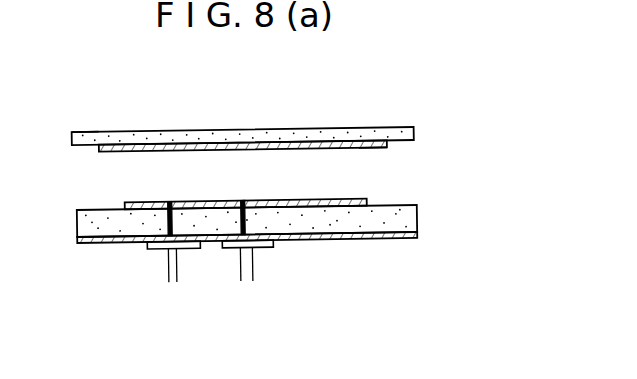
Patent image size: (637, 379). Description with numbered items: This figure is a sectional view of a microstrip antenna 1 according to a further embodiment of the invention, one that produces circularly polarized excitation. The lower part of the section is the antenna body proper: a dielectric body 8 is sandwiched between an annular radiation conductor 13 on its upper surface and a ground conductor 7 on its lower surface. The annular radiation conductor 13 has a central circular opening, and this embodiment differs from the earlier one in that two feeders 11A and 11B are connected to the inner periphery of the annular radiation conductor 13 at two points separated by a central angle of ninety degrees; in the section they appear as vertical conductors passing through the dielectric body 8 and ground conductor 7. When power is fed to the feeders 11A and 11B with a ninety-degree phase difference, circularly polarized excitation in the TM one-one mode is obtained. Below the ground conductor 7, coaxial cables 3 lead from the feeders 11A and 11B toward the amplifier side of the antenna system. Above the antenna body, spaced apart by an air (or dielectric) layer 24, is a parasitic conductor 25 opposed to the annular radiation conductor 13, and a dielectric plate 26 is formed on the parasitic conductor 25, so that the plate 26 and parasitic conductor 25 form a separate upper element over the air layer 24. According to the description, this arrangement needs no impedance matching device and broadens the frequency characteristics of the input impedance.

The microstrip antenna 1 is at (140, 125).
The dielectric plate 26 is at (89, 129).
The parasitic conductor 25 is at (107, 150).
The air layer 24 is at (383, 167).
The dielectric body 8 is at (410, 218).
The annular radiation conductor 13 is at (362, 201).
The ground conductor 7 is at (380, 241).
The feeder 11A is at (168, 226).
The feeder 11B is at (252, 219).
The coaxial cable 3 is at (174, 266).